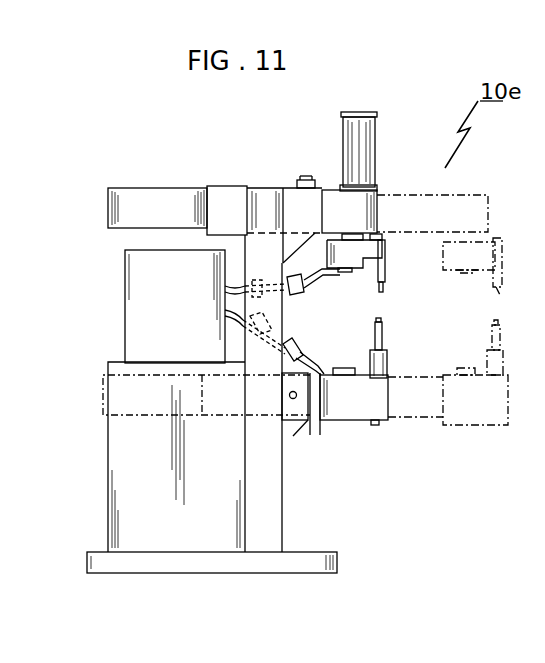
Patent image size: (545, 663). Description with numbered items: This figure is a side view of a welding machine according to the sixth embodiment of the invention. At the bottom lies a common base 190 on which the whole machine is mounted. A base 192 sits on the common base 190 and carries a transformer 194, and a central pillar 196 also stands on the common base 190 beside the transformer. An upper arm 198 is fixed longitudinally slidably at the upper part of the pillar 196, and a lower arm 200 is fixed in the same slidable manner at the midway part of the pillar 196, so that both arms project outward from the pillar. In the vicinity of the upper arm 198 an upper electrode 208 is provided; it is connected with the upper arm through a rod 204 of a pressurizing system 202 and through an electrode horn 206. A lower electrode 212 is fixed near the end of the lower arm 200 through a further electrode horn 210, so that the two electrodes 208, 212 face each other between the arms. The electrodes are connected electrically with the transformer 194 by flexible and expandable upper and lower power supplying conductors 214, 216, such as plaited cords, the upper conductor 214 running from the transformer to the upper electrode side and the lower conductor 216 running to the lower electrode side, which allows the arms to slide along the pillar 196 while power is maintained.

The common base 190 is at (314, 560).
The base 192 is at (126, 457).
The transformer 194 is at (132, 304).
The central pillar 196 is at (281, 312).
The upper arm 198 is at (378, 208).
The lower arm 200 is at (313, 416).
The pressurizing system 202 is at (366, 148).
The rod 204 is at (386, 237).
The electrode horn 206 is at (387, 258).
The upper electrode 208 is at (385, 278).
The electrode horn 210 is at (380, 399).
The lower electrode 212 is at (383, 332).
The upper power supplying conductor 214 is at (313, 280).
The lower power supplying conductor 216 is at (308, 354).